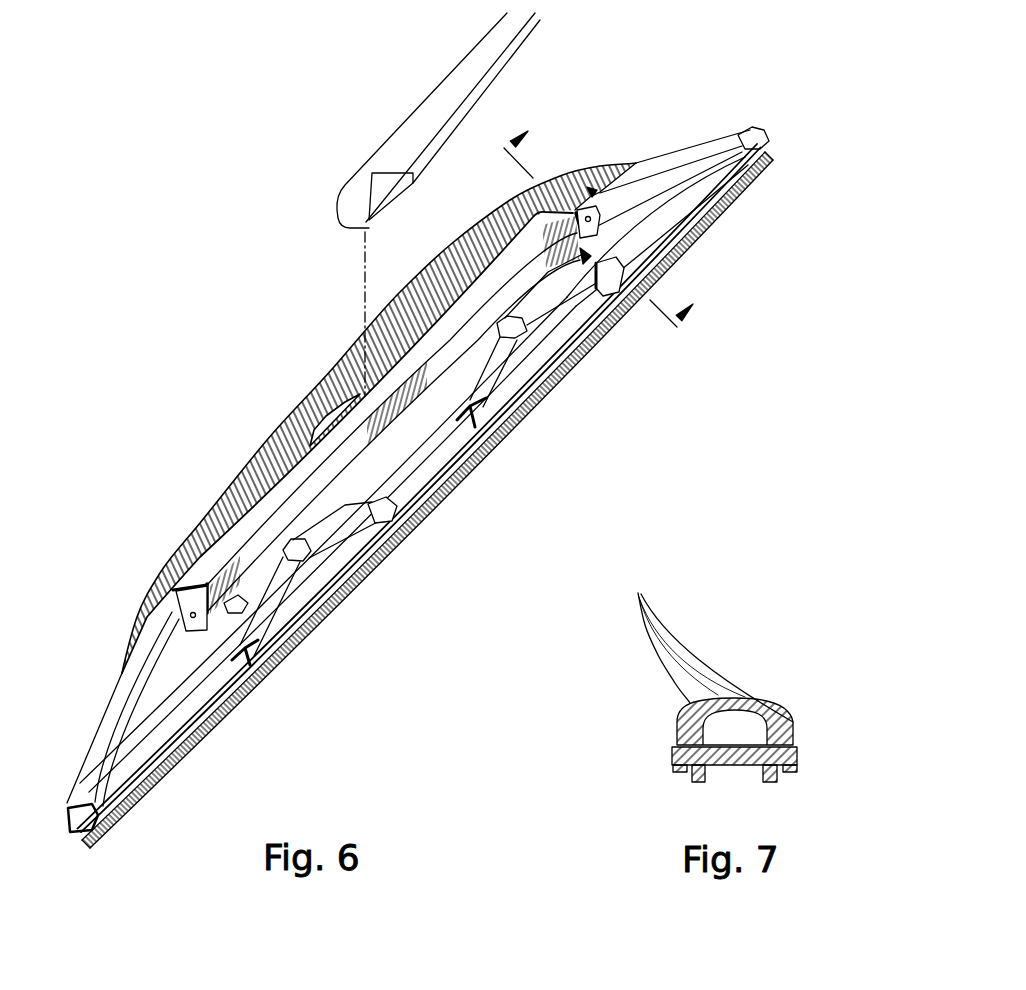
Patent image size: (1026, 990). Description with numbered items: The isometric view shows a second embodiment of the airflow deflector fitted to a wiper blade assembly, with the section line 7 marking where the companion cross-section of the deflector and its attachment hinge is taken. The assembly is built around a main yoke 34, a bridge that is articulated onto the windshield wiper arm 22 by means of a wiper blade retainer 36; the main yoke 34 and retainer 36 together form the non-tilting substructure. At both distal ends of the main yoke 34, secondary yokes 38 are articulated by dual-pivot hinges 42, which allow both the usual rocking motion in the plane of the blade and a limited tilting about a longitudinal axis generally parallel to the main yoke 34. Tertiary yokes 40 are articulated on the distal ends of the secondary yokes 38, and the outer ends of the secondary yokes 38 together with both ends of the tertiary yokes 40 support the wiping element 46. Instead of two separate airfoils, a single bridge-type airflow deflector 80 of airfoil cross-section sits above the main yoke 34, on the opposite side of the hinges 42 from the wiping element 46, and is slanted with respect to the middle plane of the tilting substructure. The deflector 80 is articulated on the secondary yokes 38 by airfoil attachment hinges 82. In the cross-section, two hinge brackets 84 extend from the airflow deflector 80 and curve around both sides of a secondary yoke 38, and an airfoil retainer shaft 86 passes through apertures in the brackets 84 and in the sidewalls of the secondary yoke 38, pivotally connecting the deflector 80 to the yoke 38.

In FIG. 6, the windshield wiper arm 22 is at (500, 44).
In FIG. 6, the section line 7— 7 is at (598, 232).
In FIG. 6, the main yoke 34 is at (330, 478).
In FIG. 6, the wiper blade retainer 36 is at (347, 406).
In FIG. 6, the secondary yoke 38 is at (689, 153).
In FIG. 7, the secondary yoke 38 is at (773, 777).
In FIG. 6, the tertiary yoke 40 is at (500, 357).
In FIG. 6, the dual-pivot hinge 42 is at (615, 305).
In FIG. 6, the wiping element 46 is at (173, 767).
In FIG. 6, the airflow deflector 80 is at (268, 442).
In FIG. 7, the airflow deflector 80 is at (675, 650).
In FIG. 6, the airfoil attachment hinge 82 is at (593, 192).
In FIG. 7, the hinge bracket 84 is at (677, 733).
In FIG. 7, the airfoil retainer shaft 86 is at (797, 758).